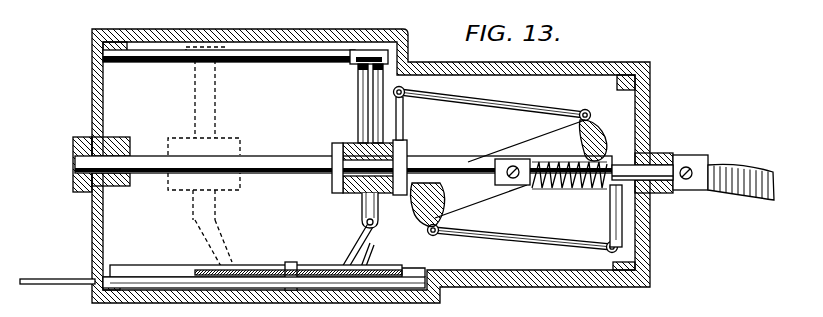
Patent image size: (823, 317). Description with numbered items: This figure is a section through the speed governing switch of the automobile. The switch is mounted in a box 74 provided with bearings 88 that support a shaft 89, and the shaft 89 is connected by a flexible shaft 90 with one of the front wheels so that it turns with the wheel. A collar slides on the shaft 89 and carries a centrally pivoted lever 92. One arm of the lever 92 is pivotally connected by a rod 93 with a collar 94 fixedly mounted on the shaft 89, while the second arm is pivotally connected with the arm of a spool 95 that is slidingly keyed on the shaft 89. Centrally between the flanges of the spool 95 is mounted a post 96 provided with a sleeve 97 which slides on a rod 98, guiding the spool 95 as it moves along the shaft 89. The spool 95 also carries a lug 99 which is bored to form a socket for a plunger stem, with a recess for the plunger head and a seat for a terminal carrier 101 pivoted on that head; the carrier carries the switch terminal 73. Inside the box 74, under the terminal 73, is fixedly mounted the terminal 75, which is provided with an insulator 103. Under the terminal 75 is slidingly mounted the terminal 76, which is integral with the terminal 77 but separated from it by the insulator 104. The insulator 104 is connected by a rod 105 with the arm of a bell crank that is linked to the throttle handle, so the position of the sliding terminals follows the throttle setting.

The switch terminal 73 is at (352, 262).
The box 74 is at (331, 37).
The terminal 75 is at (375, 268).
The terminal 76 is at (387, 279).
The terminal 77 is at (200, 263).
The bearings 88 is at (110, 147).
The shaft 89 is at (268, 158).
The flexible shaft 90 is at (753, 193).
The lever 92 is at (530, 148).
The rod 93 is at (501, 108).
The collar 94 is at (613, 192).
The spool 95 is at (352, 145).
The post 96 is at (362, 90).
The sleeve 97 is at (374, 52).
The rod 98 is at (258, 56).
The lug 99 is at (365, 212).
The terminal carrier 101 is at (377, 233).
The insulator 103 is at (335, 267).
The insulator 104 is at (287, 265).
The rod 105 is at (60, 279).